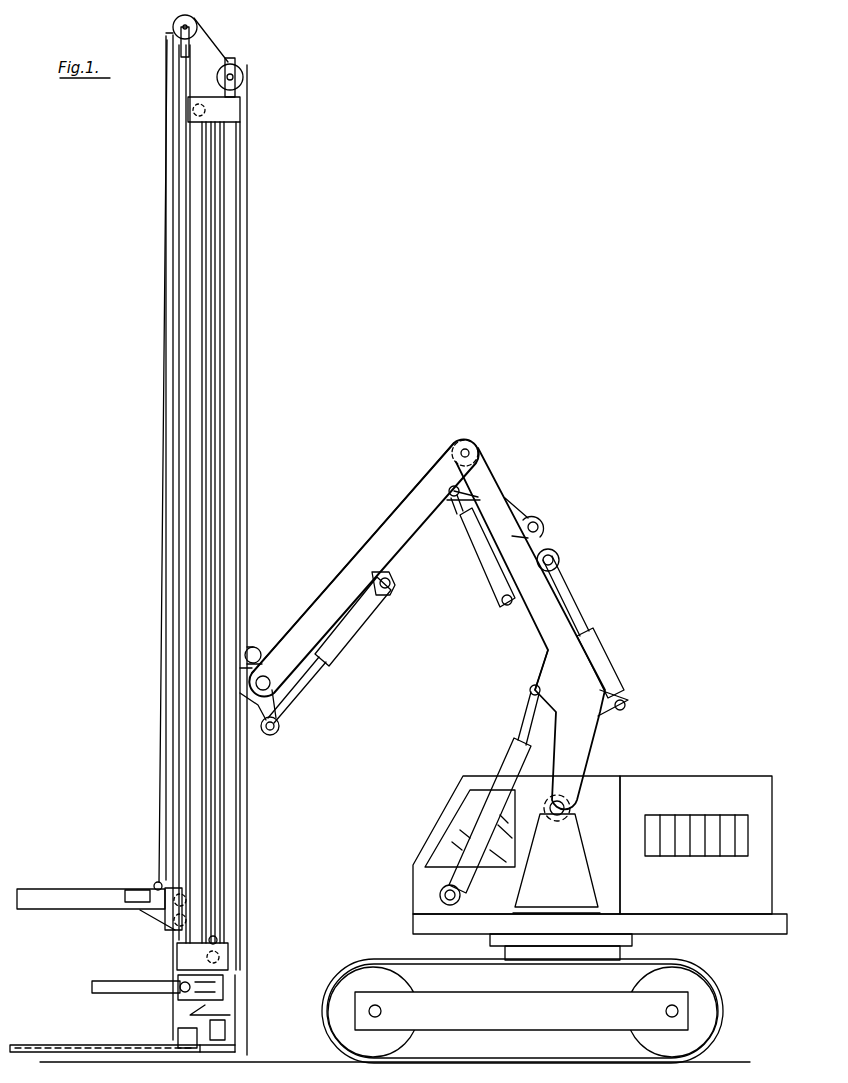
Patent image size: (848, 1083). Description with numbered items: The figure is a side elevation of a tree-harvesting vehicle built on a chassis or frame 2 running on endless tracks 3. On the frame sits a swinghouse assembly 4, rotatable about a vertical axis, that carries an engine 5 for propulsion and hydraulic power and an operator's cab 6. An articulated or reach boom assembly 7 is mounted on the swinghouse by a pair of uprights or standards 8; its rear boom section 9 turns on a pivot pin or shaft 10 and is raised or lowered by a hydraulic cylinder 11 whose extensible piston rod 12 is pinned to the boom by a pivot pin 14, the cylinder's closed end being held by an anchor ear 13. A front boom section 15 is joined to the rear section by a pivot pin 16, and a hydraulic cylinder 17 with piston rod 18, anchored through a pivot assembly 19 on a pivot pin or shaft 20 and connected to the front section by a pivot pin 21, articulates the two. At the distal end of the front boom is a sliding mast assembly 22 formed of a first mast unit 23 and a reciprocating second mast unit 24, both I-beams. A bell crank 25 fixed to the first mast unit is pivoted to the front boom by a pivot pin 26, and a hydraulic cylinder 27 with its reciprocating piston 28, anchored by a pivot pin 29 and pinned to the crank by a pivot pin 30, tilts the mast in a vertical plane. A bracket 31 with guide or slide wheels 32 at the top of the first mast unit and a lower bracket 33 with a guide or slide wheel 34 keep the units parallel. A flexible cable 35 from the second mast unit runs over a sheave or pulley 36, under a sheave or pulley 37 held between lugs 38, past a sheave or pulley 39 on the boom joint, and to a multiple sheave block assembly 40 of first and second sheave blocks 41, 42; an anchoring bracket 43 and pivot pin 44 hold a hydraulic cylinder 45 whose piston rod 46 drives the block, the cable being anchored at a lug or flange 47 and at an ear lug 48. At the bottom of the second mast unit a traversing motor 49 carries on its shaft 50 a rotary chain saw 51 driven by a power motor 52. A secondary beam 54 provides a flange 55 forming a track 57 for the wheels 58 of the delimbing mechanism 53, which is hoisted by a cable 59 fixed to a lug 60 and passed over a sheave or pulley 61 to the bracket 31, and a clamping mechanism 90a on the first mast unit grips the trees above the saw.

The chassis or frame 2 is at (549, 1020).
The endless tracks 3 is at (718, 990).
The swinghouse assembly 4 is at (742, 932).
The engine 5 is at (730, 778).
The operator's cab 6 is at (445, 832).
The articulated or reach boom assembly 7 is at (403, 566).
The uprights or standards 8 is at (566, 880).
The rear boom section 9 is at (532, 640).
The pivot pin or shaft 10 is at (570, 805).
The hydraulic cylinder 11 is at (440, 888).
The extensible piston rod 12 is at (512, 740).
The anchor ear 13 is at (442, 900).
The pivot pin 14 is at (528, 690).
The front boom section 15 is at (393, 538).
The pivot pin 16 is at (473, 448).
The hydraulic cylinder 17 is at (492, 585).
The extensible piston rod 18 is at (462, 512).
The pivot assembly 19 is at (525, 620).
The pivot pin or shaft 20 is at (503, 605).
The pivot pin 21 is at (449, 488).
The sliding mast assembly 22 is at (252, 234).
The first mast unit 23 is at (228, 308).
The second mast unit 24 is at (192, 290).
The bell crank 25 is at (272, 738).
The pivot pin 26 is at (278, 695).
The hydraulic cylinder 27 is at (330, 648).
The reciprocating piston 28 is at (305, 680).
The pivot pin 29 is at (390, 588).
The pivot pin 30 is at (277, 728).
The bracket 31 is at (226, 113).
The guide or slide wheels 32 is at (196, 112).
The lower bracket 33 is at (175, 963).
The guide or slide wheel 34 is at (228, 955).
The flexible cable 35 is at (247, 334).
The sheave or pulley 36 is at (243, 70).
The sheave or pulley 37 is at (258, 648).
The lugs 38 is at (253, 646).
The sheave or pulley 39 is at (470, 440).
The multiple sheave block assembly 40 is at (591, 609).
The first sheave block 41 is at (541, 524).
The second sheave block 42 is at (559, 562).
The anchoring bracket 43 is at (628, 707).
The pivot pin 44 is at (625, 700).
The hydraulic cylinder 45 is at (600, 643).
The extensible piston rod 46 is at (575, 606).
The lug or flange 47 is at (508, 504).
The ear lug 48 is at (220, 940).
The traversing motor 49 is at (225, 1030).
The shaft 50 is at (225, 1045).
The rotary chain saw 51 is at (60, 1044).
The power motor 52 is at (180, 1035).
The delimbing mechanism 53 is at (68, 888).
The secondary beam 54 is at (188, 225).
The flange 55 is at (173, 723).
The track 57 is at (182, 772).
The wheels 58 is at (165, 922).
The cable 59 is at (166, 360).
The lug 60 is at (155, 883).
The sheave or pulley 61 is at (197, 24).
The clamping mechanism 90a is at (90, 987).